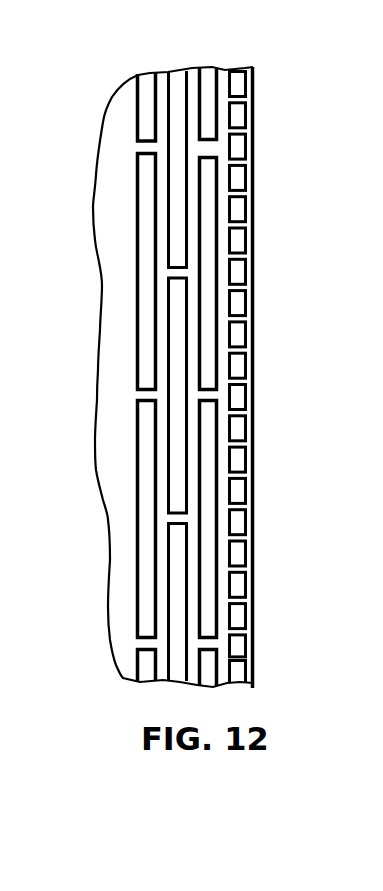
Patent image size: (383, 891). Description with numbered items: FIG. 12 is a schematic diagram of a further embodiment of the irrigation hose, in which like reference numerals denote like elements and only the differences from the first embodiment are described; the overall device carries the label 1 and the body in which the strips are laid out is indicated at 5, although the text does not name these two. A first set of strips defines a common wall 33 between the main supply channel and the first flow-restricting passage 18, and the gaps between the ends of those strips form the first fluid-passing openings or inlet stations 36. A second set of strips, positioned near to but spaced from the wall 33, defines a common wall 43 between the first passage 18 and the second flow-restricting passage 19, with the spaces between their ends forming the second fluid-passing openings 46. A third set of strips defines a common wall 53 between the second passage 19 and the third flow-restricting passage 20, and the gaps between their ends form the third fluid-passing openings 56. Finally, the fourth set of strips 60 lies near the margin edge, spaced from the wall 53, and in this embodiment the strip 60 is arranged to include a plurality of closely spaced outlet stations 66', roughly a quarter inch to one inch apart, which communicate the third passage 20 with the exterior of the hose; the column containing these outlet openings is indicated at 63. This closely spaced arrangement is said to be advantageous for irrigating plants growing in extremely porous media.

The fastener assembly 1 is at (120, 219).
The backing strip 5 is at (95, 240).
The common wall 33 is at (145, 77).
The common wall 43 is at (176, 78).
The common wall 53 is at (207, 77).
The row of square elements 63 is at (238, 78).
The third fluid-passing openings 56 is at (210, 150).
The fourth set of strips 60 is at (240, 178).
The closely spaced outlet stations 66' is at (281, 440).
The first fluid-passing openings 36 is at (138, 393).
The first flow-restricting passage 18 is at (160, 427).
The second fluid-passing openings 46 is at (167, 520).
The second flow-restricting passage 19 is at (192, 548).
The third flow-restricting passage 20 is at (220, 610).